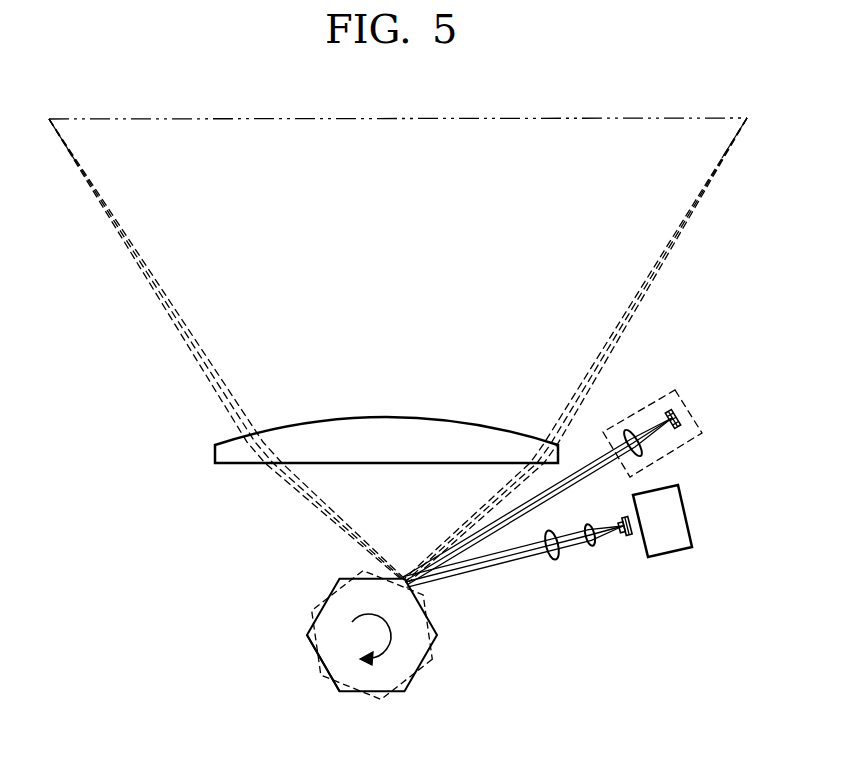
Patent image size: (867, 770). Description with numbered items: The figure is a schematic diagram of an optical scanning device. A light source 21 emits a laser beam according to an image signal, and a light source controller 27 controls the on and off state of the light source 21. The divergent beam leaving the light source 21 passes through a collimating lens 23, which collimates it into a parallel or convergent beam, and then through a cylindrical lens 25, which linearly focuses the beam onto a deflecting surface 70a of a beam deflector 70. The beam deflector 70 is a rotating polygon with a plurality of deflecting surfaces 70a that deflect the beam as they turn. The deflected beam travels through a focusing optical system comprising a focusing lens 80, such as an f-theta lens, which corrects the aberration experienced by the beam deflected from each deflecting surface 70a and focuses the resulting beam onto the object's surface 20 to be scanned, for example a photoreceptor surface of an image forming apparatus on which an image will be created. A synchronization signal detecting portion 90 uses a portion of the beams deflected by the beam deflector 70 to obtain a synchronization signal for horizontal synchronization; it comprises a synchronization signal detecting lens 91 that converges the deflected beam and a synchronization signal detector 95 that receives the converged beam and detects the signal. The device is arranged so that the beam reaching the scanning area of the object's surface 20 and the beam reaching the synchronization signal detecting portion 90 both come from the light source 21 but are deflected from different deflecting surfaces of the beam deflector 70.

The object's surface to be scanned 20 is at (568, 117).
The light source 21 is at (627, 537).
The collimating lens 23 is at (592, 548).
The cylindrical lens 25 is at (555, 561).
The light source controller 27 is at (670, 528).
The beam deflector 70 is at (407, 660).
The deflecting surface 70a is at (320, 665).
The focusing lens 80 is at (380, 464).
The synchronization signal detecting portion 90 is at (690, 412).
The synchronization signal detecting lens 91 is at (641, 453).
The synchronization signal detector 95 is at (679, 430).